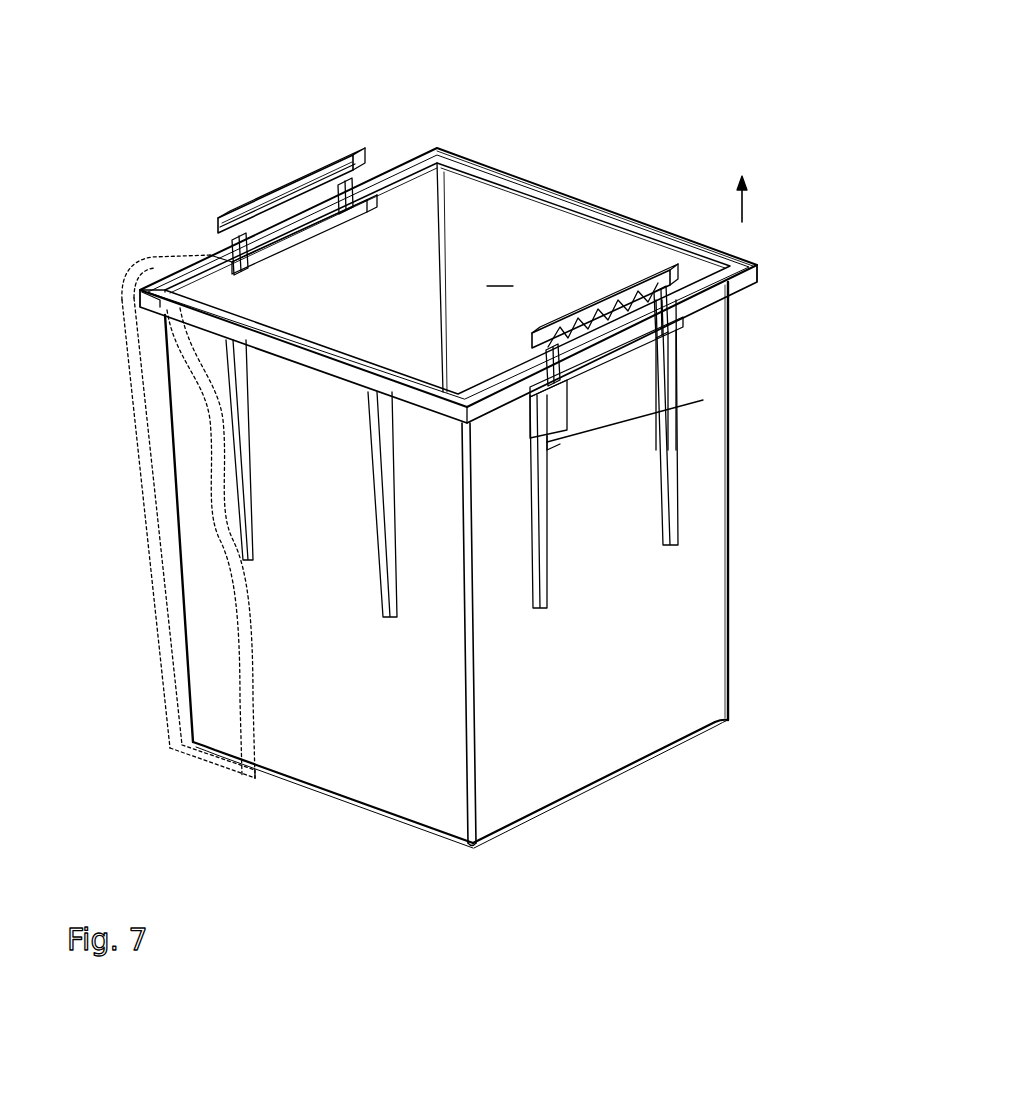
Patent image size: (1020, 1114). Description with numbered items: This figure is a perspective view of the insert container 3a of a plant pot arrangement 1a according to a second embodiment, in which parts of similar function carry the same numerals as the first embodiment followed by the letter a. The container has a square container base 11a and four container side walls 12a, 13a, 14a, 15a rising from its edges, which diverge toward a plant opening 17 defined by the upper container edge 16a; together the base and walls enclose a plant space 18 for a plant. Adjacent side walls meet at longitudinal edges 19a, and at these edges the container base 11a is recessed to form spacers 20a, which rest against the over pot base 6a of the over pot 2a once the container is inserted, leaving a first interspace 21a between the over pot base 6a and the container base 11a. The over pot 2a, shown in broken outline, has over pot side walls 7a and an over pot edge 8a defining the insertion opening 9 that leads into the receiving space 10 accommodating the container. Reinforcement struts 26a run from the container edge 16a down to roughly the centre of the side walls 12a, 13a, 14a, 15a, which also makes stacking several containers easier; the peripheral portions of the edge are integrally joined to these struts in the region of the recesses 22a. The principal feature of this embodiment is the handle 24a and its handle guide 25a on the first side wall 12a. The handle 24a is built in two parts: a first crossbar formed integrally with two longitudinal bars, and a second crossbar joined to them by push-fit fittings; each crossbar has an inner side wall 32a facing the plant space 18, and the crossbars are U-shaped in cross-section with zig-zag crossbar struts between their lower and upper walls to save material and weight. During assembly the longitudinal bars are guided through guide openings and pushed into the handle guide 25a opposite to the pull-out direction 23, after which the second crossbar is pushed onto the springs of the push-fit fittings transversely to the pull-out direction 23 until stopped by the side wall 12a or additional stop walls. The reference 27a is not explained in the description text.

The plant pot arrangement 1a is at (250, 127).
The over pot 2a is at (148, 260).
The insert container 3a is at (468, 155).
The over pot base 6a is at (188, 750).
The over pot side wall 7a is at (160, 432).
The over pot edge 8a is at (125, 273).
The insertion opening 9 is at (213, 252).
The receiving space 10 is at (155, 340).
The container base 11a is at (238, 756).
The container side wall 12a is at (705, 578).
The container side wall 13a is at (585, 240).
The container side wall 14a is at (408, 215).
The container side wall 15a is at (198, 562).
The container edge 16a is at (682, 235).
The plant opening 17 is at (446, 192).
The plant space 18 is at (500, 272).
The longitudinal edge 19a is at (470, 840).
The spacer 20a is at (475, 845).
The first interspace 21a is at (288, 778).
The recess 22a is at (673, 300).
The pull-out direction 23 is at (745, 200).
The handle 24a is at (290, 175).
The handle guide 25a is at (677, 345).
The reinforcement strut 26a is at (543, 612).
The front wall 27a is at (637, 560).
The inner side wall 32a is at (318, 192).